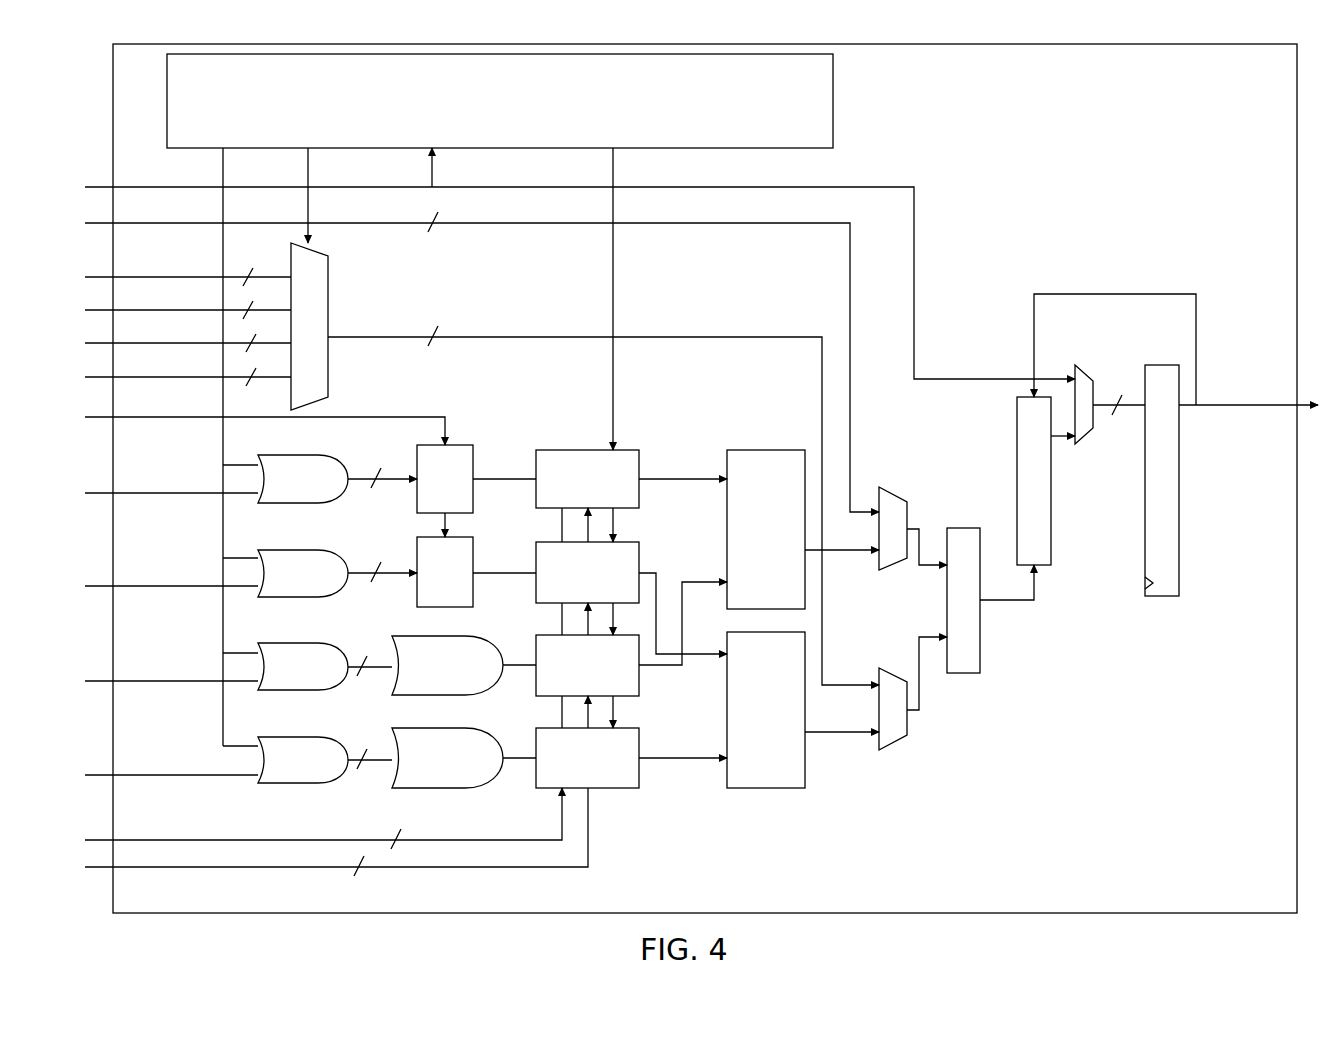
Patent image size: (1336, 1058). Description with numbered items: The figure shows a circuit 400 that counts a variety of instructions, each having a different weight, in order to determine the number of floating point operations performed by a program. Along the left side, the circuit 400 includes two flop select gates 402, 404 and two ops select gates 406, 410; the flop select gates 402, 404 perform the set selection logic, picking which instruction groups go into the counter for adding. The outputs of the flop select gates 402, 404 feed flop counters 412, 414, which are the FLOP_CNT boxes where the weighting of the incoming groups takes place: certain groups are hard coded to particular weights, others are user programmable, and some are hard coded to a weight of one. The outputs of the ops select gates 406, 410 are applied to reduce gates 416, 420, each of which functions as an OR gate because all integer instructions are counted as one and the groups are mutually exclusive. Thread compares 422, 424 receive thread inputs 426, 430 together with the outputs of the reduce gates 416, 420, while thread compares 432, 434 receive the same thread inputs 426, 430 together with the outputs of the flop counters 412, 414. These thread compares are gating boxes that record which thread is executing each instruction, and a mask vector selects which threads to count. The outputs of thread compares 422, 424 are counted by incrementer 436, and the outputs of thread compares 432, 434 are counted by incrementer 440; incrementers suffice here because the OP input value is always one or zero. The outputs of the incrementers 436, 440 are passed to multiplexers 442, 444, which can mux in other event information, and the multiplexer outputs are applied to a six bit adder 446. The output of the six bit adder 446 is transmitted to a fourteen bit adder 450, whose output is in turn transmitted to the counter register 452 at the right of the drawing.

The circuit 400 is at (701, 478).
The flop select gate 402 is at (315, 503).
The flop select gate 404 is at (300, 597).
The ops select gate 406 is at (308, 690).
The ops select gate 410 is at (297, 783).
The flop counter 412 is at (470, 445).
The flop counter 414 is at (467, 537).
The reduce gate 416 is at (445, 695).
The reduce gate 420 is at (438, 788).
The thread compare 422 is at (639, 677).
The thread compare 424 is at (617, 788).
The thread input 426 is at (462, 867).
The thread input 430 is at (275, 840).
The thread compare 432 is at (639, 555).
The thread compare 434 is at (572, 450).
The incrementer 436 is at (768, 788).
The incrementer 440 is at (757, 450).
The multiplexer 442 is at (893, 744).
The multiplexer 444 is at (893, 494).
The six bit adder 446 is at (963, 673).
The fourteen bit adder 450 is at (1017, 445).
The counter register 452 is at (1158, 596).